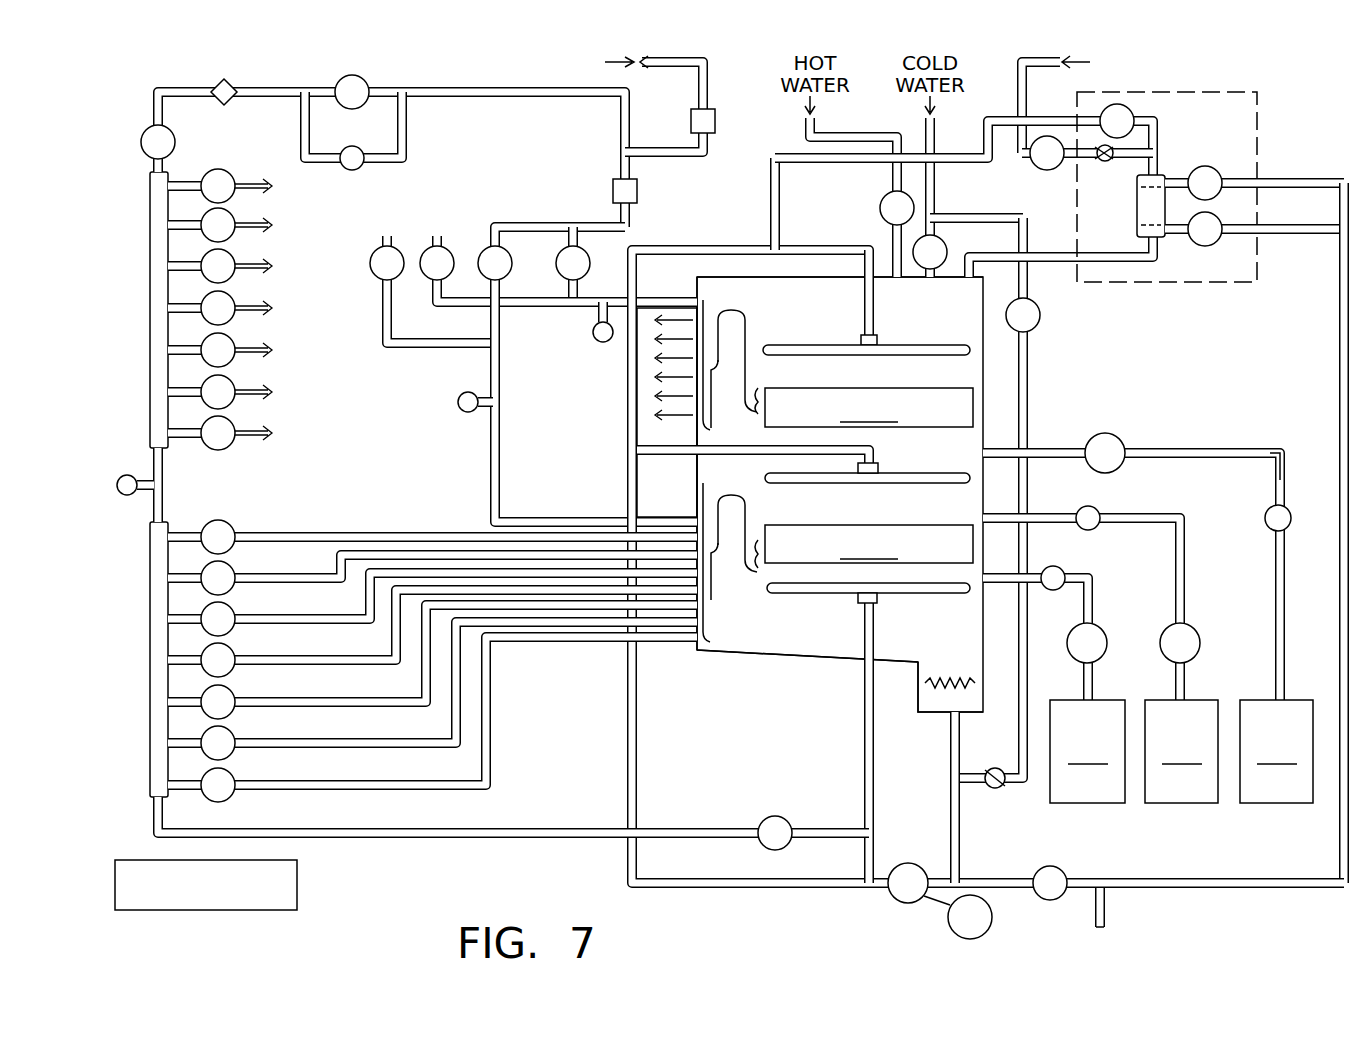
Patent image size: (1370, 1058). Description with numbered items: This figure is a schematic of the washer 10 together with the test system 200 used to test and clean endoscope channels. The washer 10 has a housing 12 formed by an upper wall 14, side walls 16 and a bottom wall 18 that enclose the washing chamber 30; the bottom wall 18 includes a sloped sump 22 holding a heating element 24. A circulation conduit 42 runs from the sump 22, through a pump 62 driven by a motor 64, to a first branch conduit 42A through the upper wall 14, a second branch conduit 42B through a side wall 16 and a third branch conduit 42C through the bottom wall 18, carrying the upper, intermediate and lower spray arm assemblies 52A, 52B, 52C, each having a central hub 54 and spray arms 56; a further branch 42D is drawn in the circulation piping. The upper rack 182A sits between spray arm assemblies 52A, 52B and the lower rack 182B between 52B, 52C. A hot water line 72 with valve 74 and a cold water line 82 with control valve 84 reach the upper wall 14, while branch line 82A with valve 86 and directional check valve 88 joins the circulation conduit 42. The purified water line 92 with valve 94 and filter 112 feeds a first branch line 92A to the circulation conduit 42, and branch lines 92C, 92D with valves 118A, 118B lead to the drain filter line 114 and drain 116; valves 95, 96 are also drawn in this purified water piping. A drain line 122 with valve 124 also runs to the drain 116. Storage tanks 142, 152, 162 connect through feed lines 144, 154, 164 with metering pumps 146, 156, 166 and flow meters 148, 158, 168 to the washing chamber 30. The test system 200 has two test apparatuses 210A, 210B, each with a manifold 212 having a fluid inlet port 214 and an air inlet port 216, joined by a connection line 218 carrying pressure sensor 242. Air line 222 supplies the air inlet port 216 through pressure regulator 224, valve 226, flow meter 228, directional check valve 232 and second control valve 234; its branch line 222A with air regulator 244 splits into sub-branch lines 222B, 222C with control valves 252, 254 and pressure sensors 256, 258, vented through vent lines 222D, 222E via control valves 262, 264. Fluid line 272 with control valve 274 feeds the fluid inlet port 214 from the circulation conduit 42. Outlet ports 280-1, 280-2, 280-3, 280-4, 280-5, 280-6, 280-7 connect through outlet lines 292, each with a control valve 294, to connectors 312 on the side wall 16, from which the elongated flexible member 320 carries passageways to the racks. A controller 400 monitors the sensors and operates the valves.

The washer 10 is at (716, 268).
The housing 12 is at (752, 270).
The upper wall 14 is at (790, 276).
The side wall 16 is at (695, 488).
The bottom wall 18 is at (775, 656).
The sump 22 is at (928, 712).
The heating element 24 is at (925, 685).
The washing chamber 30 is at (958, 377).
The circulation conduit 42 is at (640, 250).
The first branch conduit 42A is at (878, 306).
The second branch conduit 42B is at (635, 452).
The third branch conduit 42C is at (865, 750).
The conduit branch 42D is at (772, 166).
The upper spray arm assembly 52A is at (825, 340).
The intermediate spray arm assembly 52B is at (858, 486).
The lower spray arm assembly 52C is at (935, 598).
The central hub 54 is at (880, 468).
The spray arm 56 is at (812, 484).
The pump 62 is at (895, 900).
The motor 64 is at (970, 895).
The hot water line 72 is at (815, 126).
The valve 74 is at (880, 212).
The cold water line 82 is at (937, 182).
The branch line 82A is at (1030, 408).
The control valve 84 is at (948, 250).
The valve 86 is at (1042, 317).
The directional check valve 88 is at (995, 766).
The purified water line 92 is at (1038, 70).
The first branch line 92A is at (810, 162).
The branch line 92C is at (1310, 180).
The branch line 92D is at (1300, 234).
The valve 94 is at (1048, 172).
The check valve 95 is at (1105, 164).
The valve 96 is at (1135, 117).
The filter 112 is at (1136, 216).
The drain filter line 114 is at (1340, 367).
The drain line 116 is at (1105, 897).
The valve 118A is at (1222, 174).
The valve 118B is at (1210, 248).
The drain line 122 is at (1030, 880).
The valve 124 is at (1068, 876).
The storage tank 142 is at (1087, 751).
The feed line 144 is at (1092, 597).
The pump 146 is at (1100, 631).
The flow meter 148 is at (1065, 569).
The storage tank 152 is at (1181, 751).
The feed line 154 is at (1183, 557).
The pump 156 is at (1195, 631).
The flow meter 158 is at (1098, 509).
The storage tank 162 is at (1276, 751).
The feed line 164 is at (1282, 472).
The pump 166 is at (1120, 442).
The flow meter 168 is at (1266, 507).
The upper rack 182A is at (869, 407).
The lower rack 182B is at (869, 544).
The test system 200 is at (150, 92).
The test apparatus 210A is at (142, 326).
The test apparatus 210B is at (142, 670).
The manifold 212 is at (150, 230).
The fluid inlet port 214 is at (158, 802).
The air inlet port 216 is at (172, 174).
The connection line 218 is at (166, 476).
The air line 222 is at (152, 102).
The branch line 222A is at (500, 222).
The sub-branch line 222B is at (570, 287).
The sub-branch line 222C is at (490, 450).
The vent line 222D is at (520, 306).
The vent line 222E is at (382, 320).
The pressure regulator 224 is at (716, 122).
The valve 226 is at (366, 82).
The flow meter 228 is at (360, 166).
The directional check valve 232 is at (230, 82).
The second control valve 234 is at (150, 152).
The pressure sensor 242 is at (124, 474).
The air regulator 244 is at (615, 180).
The control valve 252 is at (580, 248).
The control valve 254 is at (485, 250).
The pressure sensor 256 is at (603, 344).
The pressure sensor 258 is at (457, 405).
The control valve 262 is at (428, 282).
The control valve 264 is at (372, 270).
The fluid line 272 is at (432, 838).
The control valve 274 is at (768, 818).
The outlet port 280-1 is at (183, 184).
The outlet port 280-2 is at (185, 225).
The outlet port 280-3 is at (185, 266).
The outlet port 280-4 is at (183, 660).
The outlet port 280-5 is at (183, 702).
The outlet port 280-6 is at (185, 392).
The outlet port 280-7 is at (183, 785).
The outlet line 292 is at (265, 432).
The control valve 294 is at (238, 328).
The connector 312 is at (690, 646).
The elongated flexible member 320 is at (752, 326).
The controller 400 is at (300, 884).